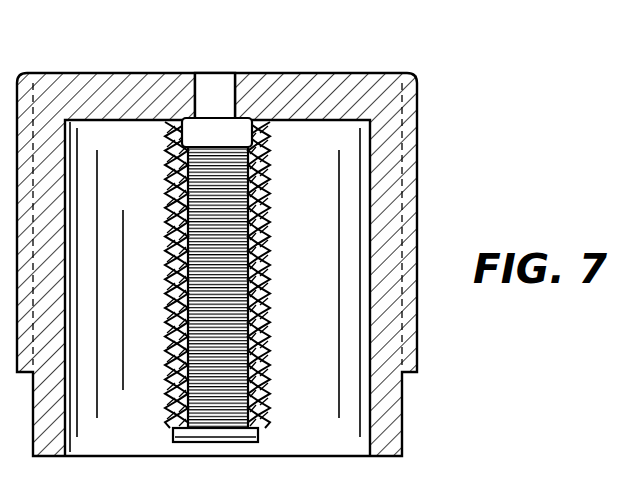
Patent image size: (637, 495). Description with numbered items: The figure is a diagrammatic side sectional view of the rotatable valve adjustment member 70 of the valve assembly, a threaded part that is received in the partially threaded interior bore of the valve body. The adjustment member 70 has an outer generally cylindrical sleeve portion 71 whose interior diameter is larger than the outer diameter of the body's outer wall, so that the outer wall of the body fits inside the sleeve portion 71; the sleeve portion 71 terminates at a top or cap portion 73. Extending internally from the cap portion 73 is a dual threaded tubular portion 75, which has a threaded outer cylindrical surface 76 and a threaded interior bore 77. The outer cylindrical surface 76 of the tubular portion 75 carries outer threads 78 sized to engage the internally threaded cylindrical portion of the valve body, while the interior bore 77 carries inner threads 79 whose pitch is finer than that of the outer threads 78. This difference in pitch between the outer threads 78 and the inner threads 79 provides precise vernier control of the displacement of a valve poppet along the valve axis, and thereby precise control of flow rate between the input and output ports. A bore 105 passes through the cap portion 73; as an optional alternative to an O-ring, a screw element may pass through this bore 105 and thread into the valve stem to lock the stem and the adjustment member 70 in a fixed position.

The rotatable valve adjustment member 70 is at (426, 153).
The outer generally cylindrical sleeve portion 71 is at (385, 338).
The cap portion 73 is at (318, 87).
The dual threaded tubular portion 75 is at (270, 255).
The threaded outer cylindrical surface 76 is at (272, 128).
The threaded interior bore 77 is at (178, 139).
The outer threads 78 is at (270, 193).
The inner threads 79 is at (168, 188).
The bore 105 is at (226, 73).